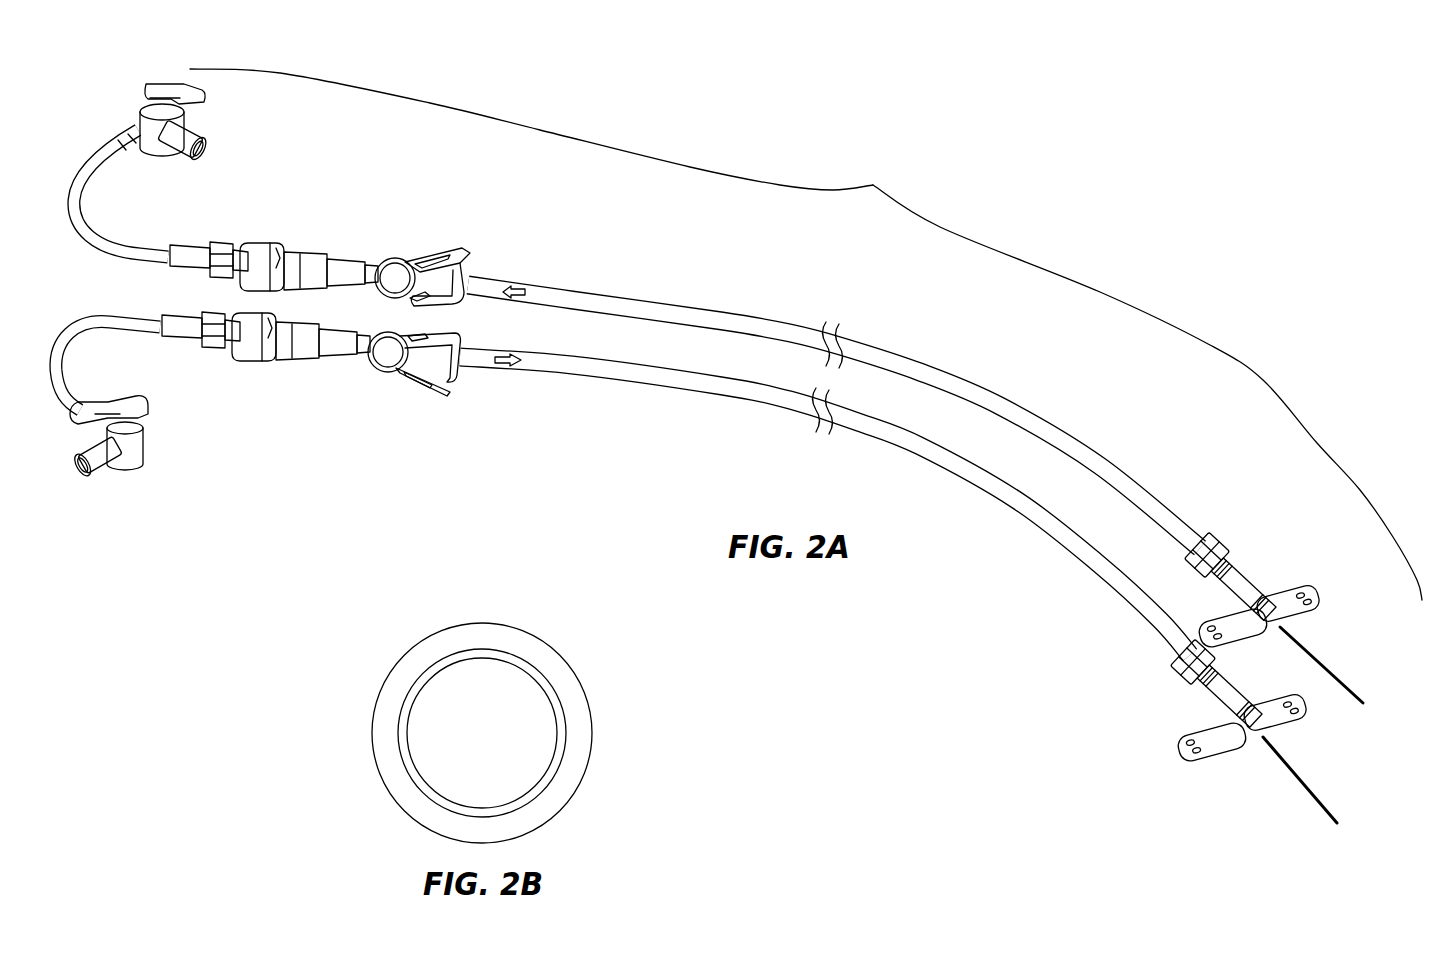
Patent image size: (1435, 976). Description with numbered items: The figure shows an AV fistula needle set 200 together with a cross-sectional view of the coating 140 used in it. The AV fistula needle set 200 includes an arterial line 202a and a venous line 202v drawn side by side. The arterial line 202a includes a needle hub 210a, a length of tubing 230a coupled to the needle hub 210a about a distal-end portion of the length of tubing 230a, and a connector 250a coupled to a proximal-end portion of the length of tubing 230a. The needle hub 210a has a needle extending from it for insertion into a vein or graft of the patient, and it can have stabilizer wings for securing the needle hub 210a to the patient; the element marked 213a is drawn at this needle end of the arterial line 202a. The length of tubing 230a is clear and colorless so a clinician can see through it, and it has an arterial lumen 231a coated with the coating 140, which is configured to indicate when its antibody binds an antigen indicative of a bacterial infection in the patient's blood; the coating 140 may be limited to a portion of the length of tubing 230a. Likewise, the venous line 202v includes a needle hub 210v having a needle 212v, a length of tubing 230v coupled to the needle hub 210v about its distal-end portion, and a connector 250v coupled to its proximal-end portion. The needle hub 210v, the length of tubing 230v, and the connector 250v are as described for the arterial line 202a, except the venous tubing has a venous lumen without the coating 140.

In FIG. 2A, the AV fistula needle set 200 is at (873, 185).
In FIG. 2A, the arterial line 202a is at (741, 393).
In FIG. 2A, the venous line 202v is at (696, 586).
In FIG. 2A, the length of tubing 230a is at (617, 298).
In FIG. 2B, the length of tubing 230a is at (498, 637).
In FIG. 2A, the length of tubing 230v is at (600, 378).
In FIG. 2B, the arterial lumen 231a is at (443, 712).
In FIG. 2B, the coating 140 is at (565, 728).
In FIG. 2A, the connector 250a is at (275, 241).
In FIG. 2A, the connector 250v is at (270, 356).
In FIG. 2A, the needle hub 210a is at (1243, 576).
In FIG. 2A, the needle hub 210v is at (1175, 697).
In FIG. 2A, the arterial needle 213a is at (1320, 657).
In FIG. 2A, the needle 212v is at (1297, 783).